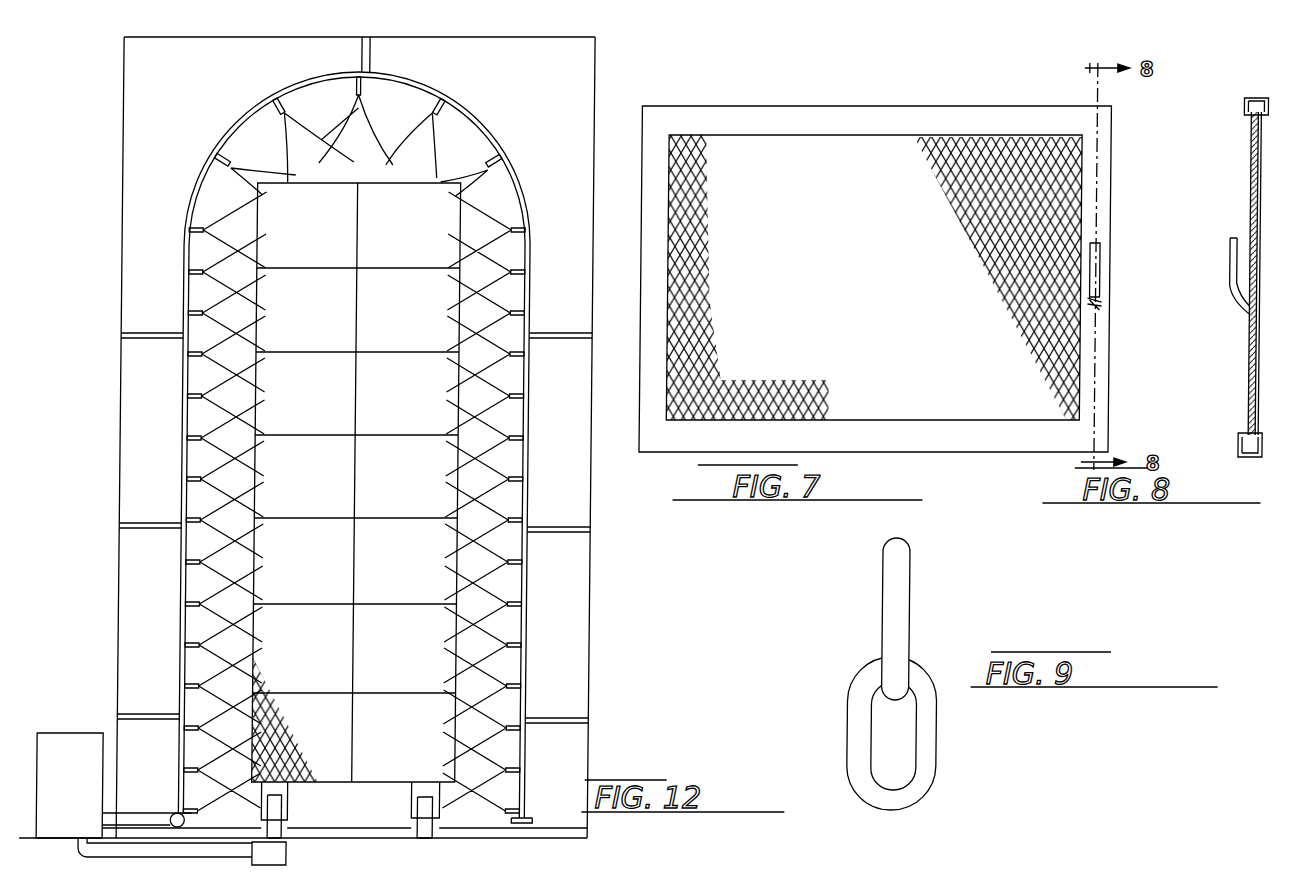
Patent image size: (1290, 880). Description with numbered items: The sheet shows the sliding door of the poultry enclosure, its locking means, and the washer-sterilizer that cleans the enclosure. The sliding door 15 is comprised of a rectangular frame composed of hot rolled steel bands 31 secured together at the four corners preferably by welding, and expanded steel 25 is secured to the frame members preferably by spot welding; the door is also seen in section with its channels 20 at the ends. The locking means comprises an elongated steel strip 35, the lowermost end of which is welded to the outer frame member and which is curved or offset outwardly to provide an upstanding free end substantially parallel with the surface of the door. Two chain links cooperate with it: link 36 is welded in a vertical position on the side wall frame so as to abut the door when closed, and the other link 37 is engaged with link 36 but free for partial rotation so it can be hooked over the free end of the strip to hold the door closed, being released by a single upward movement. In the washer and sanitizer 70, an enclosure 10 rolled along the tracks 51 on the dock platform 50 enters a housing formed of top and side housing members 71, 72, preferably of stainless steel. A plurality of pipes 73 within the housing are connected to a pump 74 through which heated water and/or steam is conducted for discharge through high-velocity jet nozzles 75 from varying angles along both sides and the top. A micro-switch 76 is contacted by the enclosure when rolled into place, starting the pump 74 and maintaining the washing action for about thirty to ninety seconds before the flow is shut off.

In FIG. 12, the unitary enclosure 10 is at (405, 409).
In FIG. 7, the sliding door 15 is at (888, 280).
In FIG. 8, the channels 20 is at (1261, 98).
In FIG. 7, the expanded steel 25 is at (1055, 205).
In FIG. 8, the expanded steel 25 is at (1257, 170).
In FIG. 7, the hot rolled steel bands 31 is at (858, 122).
In FIG. 8, the hot rolled steel bands 31 is at (1252, 140).
In FIG. 8, the elongated steel strip 35 is at (1230, 258).
In FIG. 9, the chain link 36 is at (901, 603).
In FIG. 9, the chain link 37 is at (932, 727).
In FIG. 12, the dock space or platform 50 is at (365, 838).
In FIG. 12, the tracks 51 is at (292, 828).
In FIG. 12, the washer and sanitizer 70 is at (113, 258).
In FIG. 12, the top housing member 71 is at (405, 37).
In FIG. 12, the side housing member 72 is at (122, 432).
In FIG. 12, the pipes or tubing 73 is at (500, 138).
In FIG. 12, the pump 74 is at (84, 745).
In FIG. 12, the high-velocity jet nozzles 75 is at (355, 88).
In FIG. 12, the micro-switch 76 is at (292, 855).